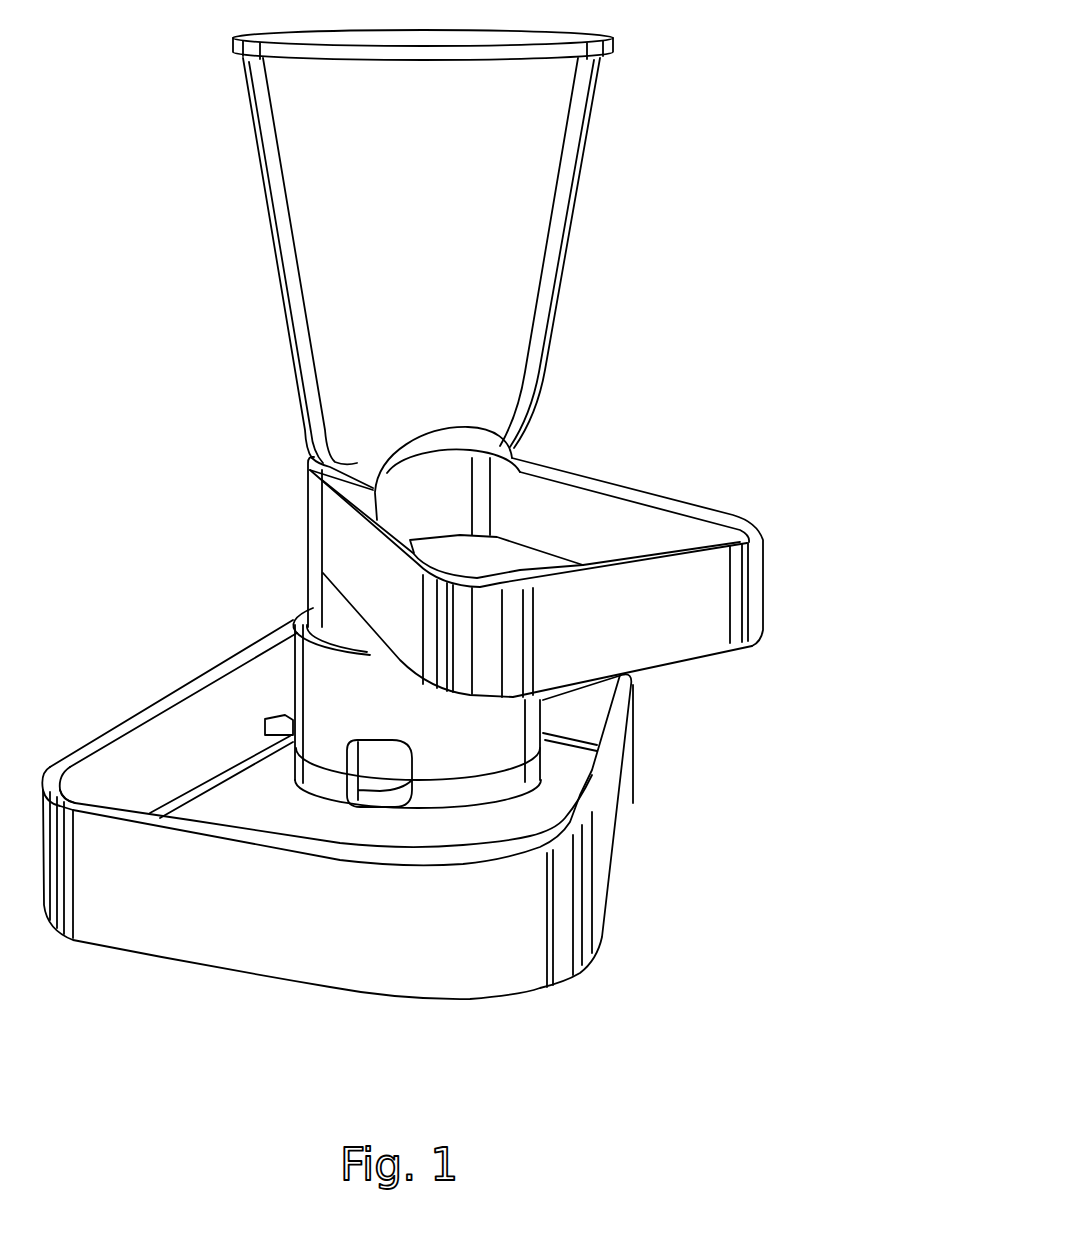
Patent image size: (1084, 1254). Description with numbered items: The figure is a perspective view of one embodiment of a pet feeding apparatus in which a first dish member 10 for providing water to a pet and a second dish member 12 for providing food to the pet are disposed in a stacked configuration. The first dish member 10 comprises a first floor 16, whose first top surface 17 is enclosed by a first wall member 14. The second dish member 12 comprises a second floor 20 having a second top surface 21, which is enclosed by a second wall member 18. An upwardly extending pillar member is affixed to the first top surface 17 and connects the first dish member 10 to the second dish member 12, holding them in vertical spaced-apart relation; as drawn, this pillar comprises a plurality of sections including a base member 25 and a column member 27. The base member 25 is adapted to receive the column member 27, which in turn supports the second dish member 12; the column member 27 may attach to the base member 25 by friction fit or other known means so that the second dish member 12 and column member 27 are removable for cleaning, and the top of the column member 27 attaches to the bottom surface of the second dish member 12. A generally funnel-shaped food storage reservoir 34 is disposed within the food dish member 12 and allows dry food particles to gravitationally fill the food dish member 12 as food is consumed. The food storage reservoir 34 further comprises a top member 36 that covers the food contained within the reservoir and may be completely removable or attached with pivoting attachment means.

The first dish member 10 is at (645, 878).
The second dish member 12 is at (777, 557).
The first wall member 14 is at (249, 922).
The first floor 16 is at (221, 803).
The first top surface 17 is at (265, 612).
The second wall member 18 is at (610, 630).
The second floor 20 is at (517, 553).
The second top surface 21 is at (464, 567).
The base member 25 is at (513, 779).
The column member 27 is at (310, 610).
The food storage reservoir 34 is at (392, 207).
The top member 36 is at (607, 37).